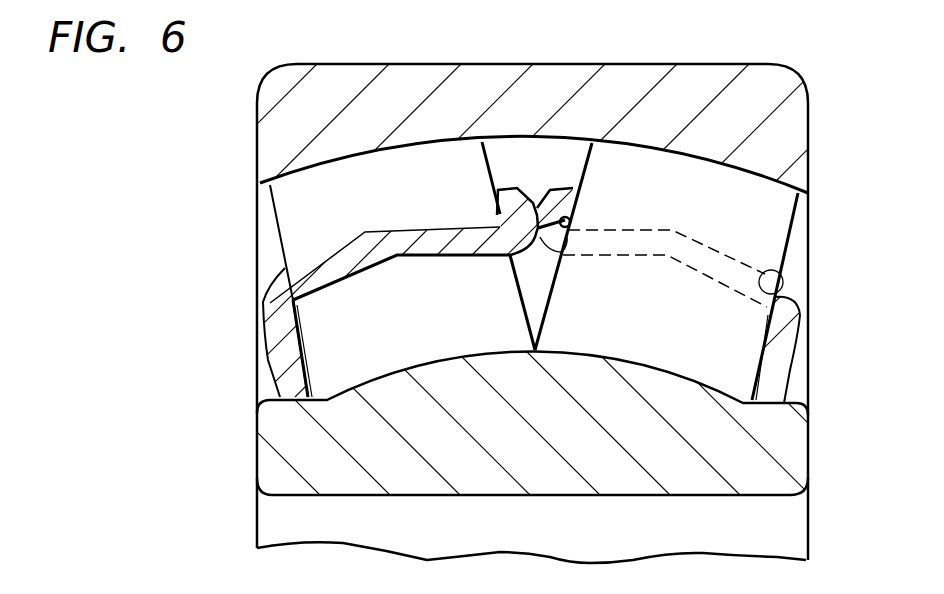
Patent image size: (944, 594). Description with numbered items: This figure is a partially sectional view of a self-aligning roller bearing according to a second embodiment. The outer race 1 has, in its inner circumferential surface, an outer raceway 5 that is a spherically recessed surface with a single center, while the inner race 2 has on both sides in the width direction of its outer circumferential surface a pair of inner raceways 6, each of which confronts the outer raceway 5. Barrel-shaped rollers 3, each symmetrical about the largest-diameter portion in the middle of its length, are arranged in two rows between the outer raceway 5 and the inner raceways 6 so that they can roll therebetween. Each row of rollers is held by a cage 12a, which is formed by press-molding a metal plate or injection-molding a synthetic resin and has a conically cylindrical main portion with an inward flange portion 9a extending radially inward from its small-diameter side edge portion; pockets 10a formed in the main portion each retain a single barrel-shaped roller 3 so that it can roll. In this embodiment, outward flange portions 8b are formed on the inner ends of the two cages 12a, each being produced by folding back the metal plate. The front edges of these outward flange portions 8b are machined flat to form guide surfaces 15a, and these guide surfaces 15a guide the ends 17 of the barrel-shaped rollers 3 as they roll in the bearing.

The outer race 1 is at (703, 82).
The inner race 2 is at (783, 473).
The barrel-shaped roller 3 is at (293, 207).
The outer raceway 5 is at (783, 145).
The inner raceway 6 is at (415, 390).
The outward flange portion 8b is at (515, 198).
The inward flange portion 9a is at (285, 355).
The pocket 10a is at (783, 271).
The cage 12a is at (268, 297).
The guide surface 15a is at (497, 198).
The end of barrel-shaped roller 17 is at (497, 150).